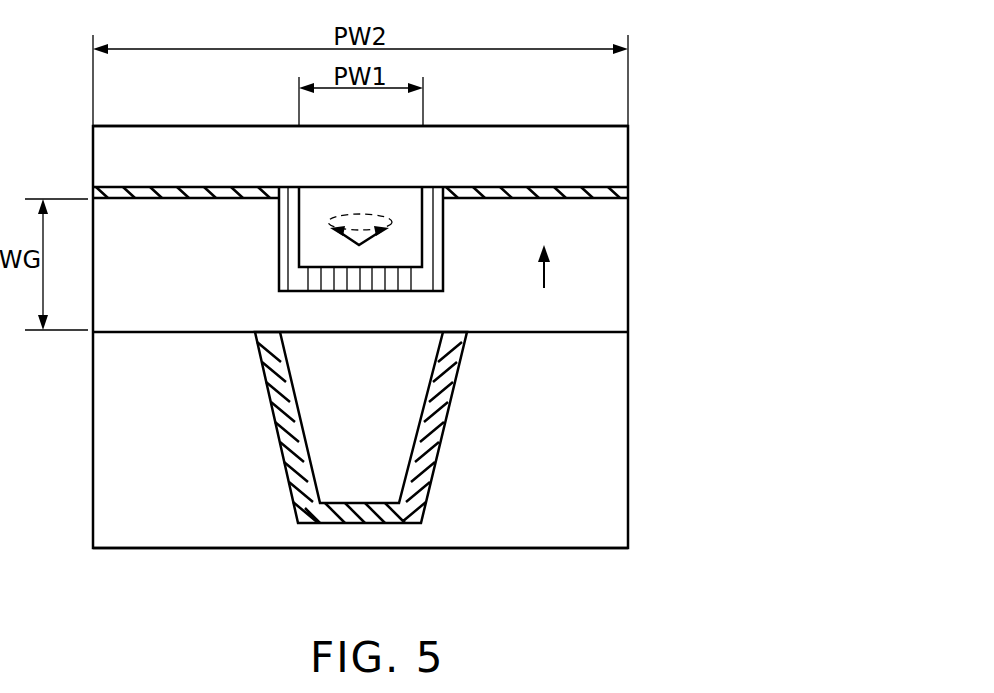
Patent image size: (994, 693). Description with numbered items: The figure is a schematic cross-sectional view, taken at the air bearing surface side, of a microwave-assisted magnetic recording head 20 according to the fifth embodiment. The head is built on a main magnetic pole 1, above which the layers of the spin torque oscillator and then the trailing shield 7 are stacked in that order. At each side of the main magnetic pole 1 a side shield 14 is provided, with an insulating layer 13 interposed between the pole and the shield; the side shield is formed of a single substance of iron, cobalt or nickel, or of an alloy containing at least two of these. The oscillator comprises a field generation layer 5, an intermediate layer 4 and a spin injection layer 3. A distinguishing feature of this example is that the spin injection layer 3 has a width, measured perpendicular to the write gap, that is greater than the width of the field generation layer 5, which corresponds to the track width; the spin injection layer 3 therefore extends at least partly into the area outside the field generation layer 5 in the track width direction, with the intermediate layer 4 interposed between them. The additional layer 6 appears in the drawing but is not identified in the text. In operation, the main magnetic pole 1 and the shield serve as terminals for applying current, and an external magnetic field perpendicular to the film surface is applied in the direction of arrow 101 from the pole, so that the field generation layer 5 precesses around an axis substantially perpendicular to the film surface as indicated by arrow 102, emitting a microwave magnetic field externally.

The microwave-assisted magnetic recording head 20 is at (690, 119).
The trailing shield 7 is at (617, 152).
The current blocking layer 6 is at (630, 191).
The spin injection layer 3 is at (617, 306).
The intermediate layer 4 is at (430, 262).
The field generation layer 5 is at (413, 234).
The arrow indicating precession 102 is at (377, 221).
The arrow indicating external magnetic field direction 101 is at (546, 270).
The side shield 14 is at (617, 459).
The insulating layer 13 is at (387, 520).
The main magnetic pole 1 is at (342, 483).